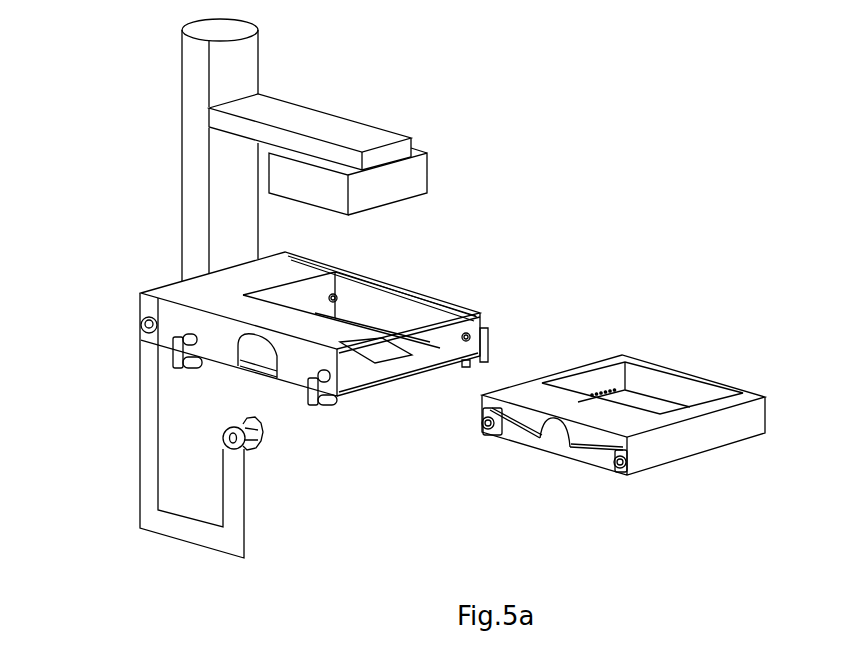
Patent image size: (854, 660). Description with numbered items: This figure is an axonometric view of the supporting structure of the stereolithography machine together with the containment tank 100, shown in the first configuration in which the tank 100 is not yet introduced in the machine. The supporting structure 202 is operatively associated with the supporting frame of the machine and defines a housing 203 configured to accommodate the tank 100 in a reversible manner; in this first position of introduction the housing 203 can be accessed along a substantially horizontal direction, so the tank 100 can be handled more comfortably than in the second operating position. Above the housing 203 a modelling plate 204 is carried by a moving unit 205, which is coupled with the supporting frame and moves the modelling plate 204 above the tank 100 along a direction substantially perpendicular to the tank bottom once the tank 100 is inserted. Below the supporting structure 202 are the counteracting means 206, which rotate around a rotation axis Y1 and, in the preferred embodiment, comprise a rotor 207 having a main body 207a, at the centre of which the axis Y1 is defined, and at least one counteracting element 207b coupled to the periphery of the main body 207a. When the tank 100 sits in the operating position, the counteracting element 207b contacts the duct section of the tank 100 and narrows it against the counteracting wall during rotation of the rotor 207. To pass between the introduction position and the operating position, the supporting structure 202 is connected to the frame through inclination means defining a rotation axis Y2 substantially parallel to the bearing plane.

The containment tank 100 is at (687, 355).
The supporting structure 202 is at (362, 255).
The housing 203 is at (443, 342).
The modelling plate 204 is at (398, 108).
The moving unit 205 is at (247, 47).
The counteracting means 206 is at (263, 470).
The rotor 207 is at (270, 453).
The main body 207a is at (243, 447).
The counteracting element 207b is at (257, 423).
The rotation axis Y1 is at (232, 438).
The rotation axis Y2 is at (147, 326).